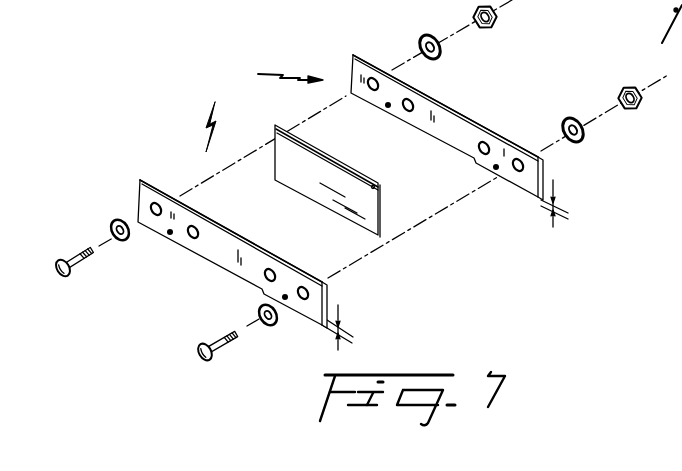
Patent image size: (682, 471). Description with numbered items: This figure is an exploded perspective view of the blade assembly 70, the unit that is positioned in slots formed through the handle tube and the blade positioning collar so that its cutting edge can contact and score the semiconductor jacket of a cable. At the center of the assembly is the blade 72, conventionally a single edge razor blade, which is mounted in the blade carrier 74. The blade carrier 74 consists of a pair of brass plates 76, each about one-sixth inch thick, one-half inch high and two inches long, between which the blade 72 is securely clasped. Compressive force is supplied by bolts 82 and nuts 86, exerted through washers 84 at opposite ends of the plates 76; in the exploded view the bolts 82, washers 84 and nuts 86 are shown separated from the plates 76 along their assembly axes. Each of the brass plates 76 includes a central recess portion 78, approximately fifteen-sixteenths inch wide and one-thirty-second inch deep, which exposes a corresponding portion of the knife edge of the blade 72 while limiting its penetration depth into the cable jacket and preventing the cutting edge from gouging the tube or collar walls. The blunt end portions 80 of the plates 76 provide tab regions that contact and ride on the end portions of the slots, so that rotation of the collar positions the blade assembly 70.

The blade assembly 70 is at (472, 270).
The blade 72 is at (372, 233).
The blade carrier 74 is at (244, 88).
The brass plates 76 is at (139, 182).
The central recess portion 78 is at (203, 253).
The blunt end portions 80 is at (160, 228).
The bolts 82 is at (69, 278).
The washers 84 is at (112, 217).
The nuts 86 is at (495, 27).